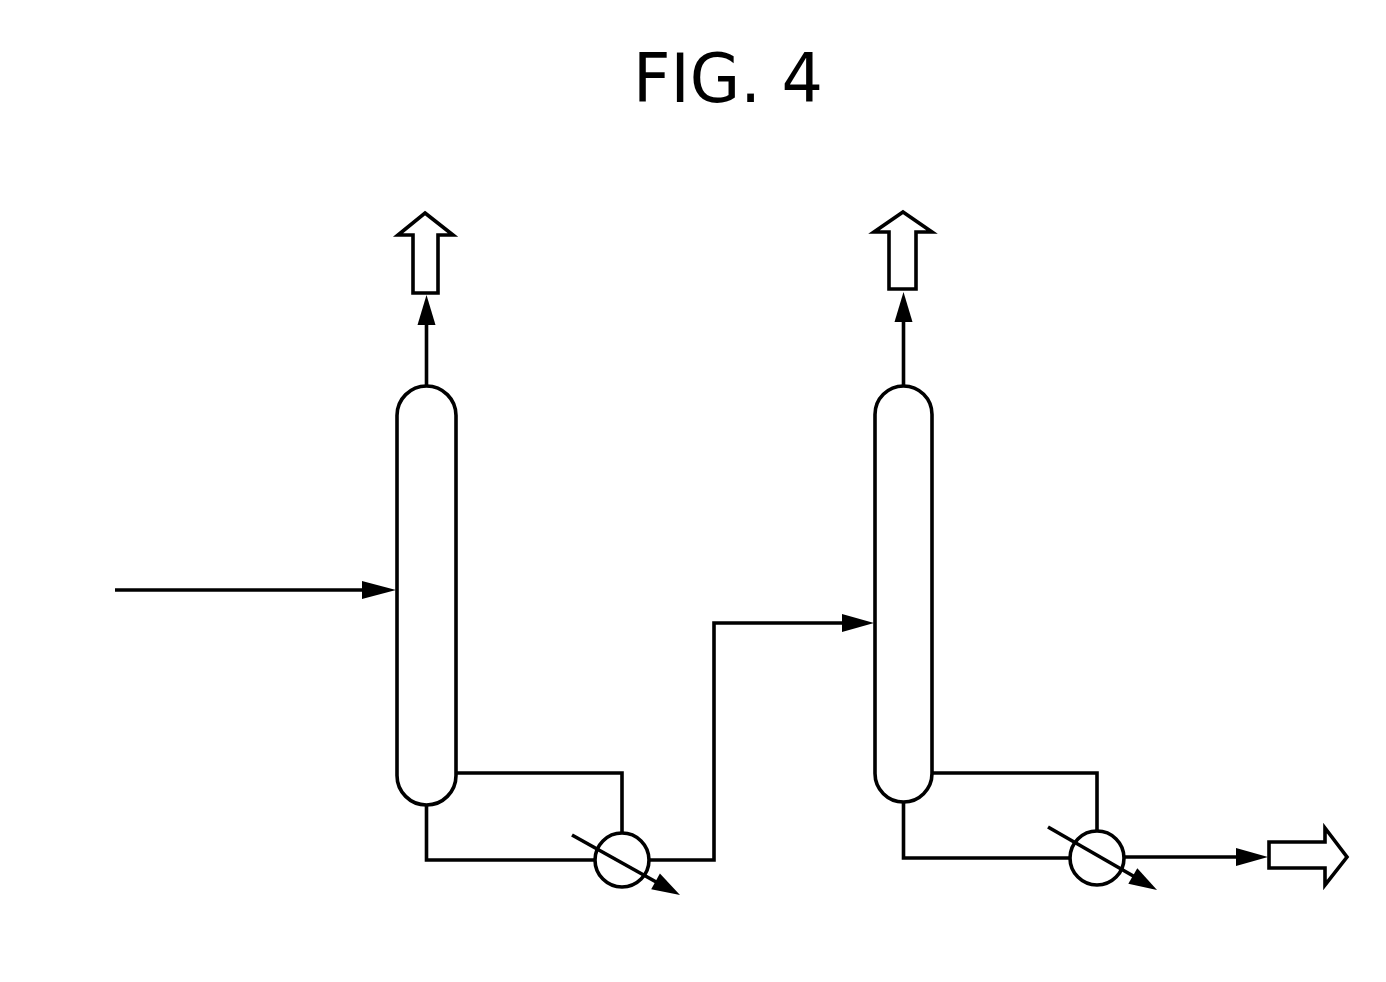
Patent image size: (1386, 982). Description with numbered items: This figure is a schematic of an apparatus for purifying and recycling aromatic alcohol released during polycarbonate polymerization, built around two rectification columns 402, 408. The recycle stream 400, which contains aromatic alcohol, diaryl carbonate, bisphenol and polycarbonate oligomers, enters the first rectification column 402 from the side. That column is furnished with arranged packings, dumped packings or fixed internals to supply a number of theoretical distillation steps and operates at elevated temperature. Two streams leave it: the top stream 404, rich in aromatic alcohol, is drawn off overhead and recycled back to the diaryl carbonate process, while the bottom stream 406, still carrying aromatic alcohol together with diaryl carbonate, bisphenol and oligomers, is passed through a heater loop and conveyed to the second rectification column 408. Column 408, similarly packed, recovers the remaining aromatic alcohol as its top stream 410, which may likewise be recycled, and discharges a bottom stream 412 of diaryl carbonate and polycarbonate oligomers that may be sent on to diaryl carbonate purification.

The recycle stream 400 is at (237, 589).
The rectification column 402 is at (456, 546).
The top stream 404 is at (438, 272).
The bottom stream 406 is at (714, 822).
The rectification column 408 is at (932, 563).
The top stream 410 is at (916, 263).
The bottom stream 412 is at (1217, 856).